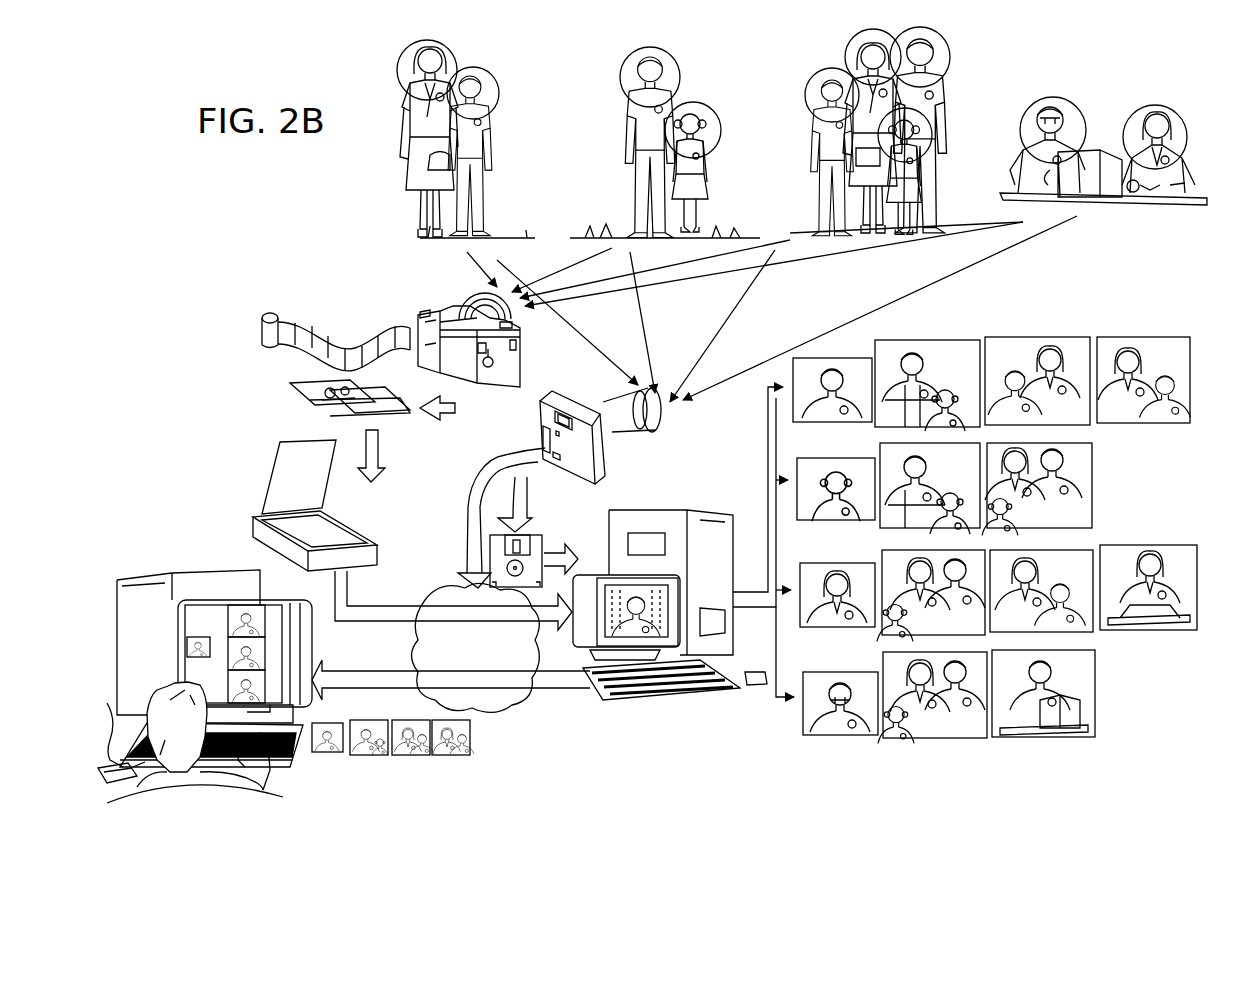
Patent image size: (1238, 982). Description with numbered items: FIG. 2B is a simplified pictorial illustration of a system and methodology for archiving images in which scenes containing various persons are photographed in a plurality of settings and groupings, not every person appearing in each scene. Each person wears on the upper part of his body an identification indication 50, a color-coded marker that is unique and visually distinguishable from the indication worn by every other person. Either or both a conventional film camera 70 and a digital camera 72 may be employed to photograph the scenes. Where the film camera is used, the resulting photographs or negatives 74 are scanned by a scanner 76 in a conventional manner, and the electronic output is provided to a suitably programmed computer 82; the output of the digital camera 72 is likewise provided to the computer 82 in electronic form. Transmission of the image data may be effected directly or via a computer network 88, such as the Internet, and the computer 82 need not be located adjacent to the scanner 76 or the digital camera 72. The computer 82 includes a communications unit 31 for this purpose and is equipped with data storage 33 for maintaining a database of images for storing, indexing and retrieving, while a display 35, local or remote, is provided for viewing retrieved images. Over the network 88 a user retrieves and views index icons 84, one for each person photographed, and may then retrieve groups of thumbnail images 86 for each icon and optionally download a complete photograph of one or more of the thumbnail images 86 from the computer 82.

The identification indication 50 is at (500, 93).
The conventional film camera 70 is at (520, 372).
The digital camera 72 is at (630, 457).
The photographs or negatives 74 is at (295, 390).
The scanner 76 is at (335, 535).
The computer 82 is at (674, 611).
The data storage 33 is at (628, 533).
The communications unit 31 is at (725, 620).
The display 35 is at (585, 668).
The index icons 84 is at (812, 365).
The thumbnail images 86 is at (1115, 337).
The computer network 88 is at (550, 703).